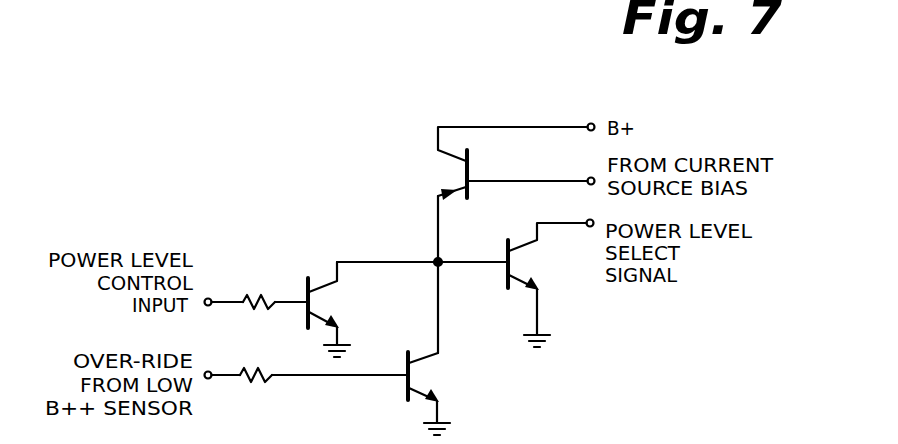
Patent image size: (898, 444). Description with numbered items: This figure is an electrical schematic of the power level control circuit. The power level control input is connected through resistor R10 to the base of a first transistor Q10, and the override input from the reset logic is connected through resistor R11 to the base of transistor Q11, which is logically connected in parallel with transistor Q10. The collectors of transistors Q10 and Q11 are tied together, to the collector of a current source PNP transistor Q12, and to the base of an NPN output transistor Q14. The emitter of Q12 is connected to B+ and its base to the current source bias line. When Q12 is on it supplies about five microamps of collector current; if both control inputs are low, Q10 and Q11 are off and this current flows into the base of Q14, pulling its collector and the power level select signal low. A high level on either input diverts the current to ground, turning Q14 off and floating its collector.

The resistor R10 is at (262, 298).
The resistor R11 is at (258, 371).
The transistor Q10 is at (318, 306).
The transistor Q11 is at (417, 379).
The current source PNP transistor Q12 is at (452, 178).
The NPN output transistor Q14 is at (518, 265).